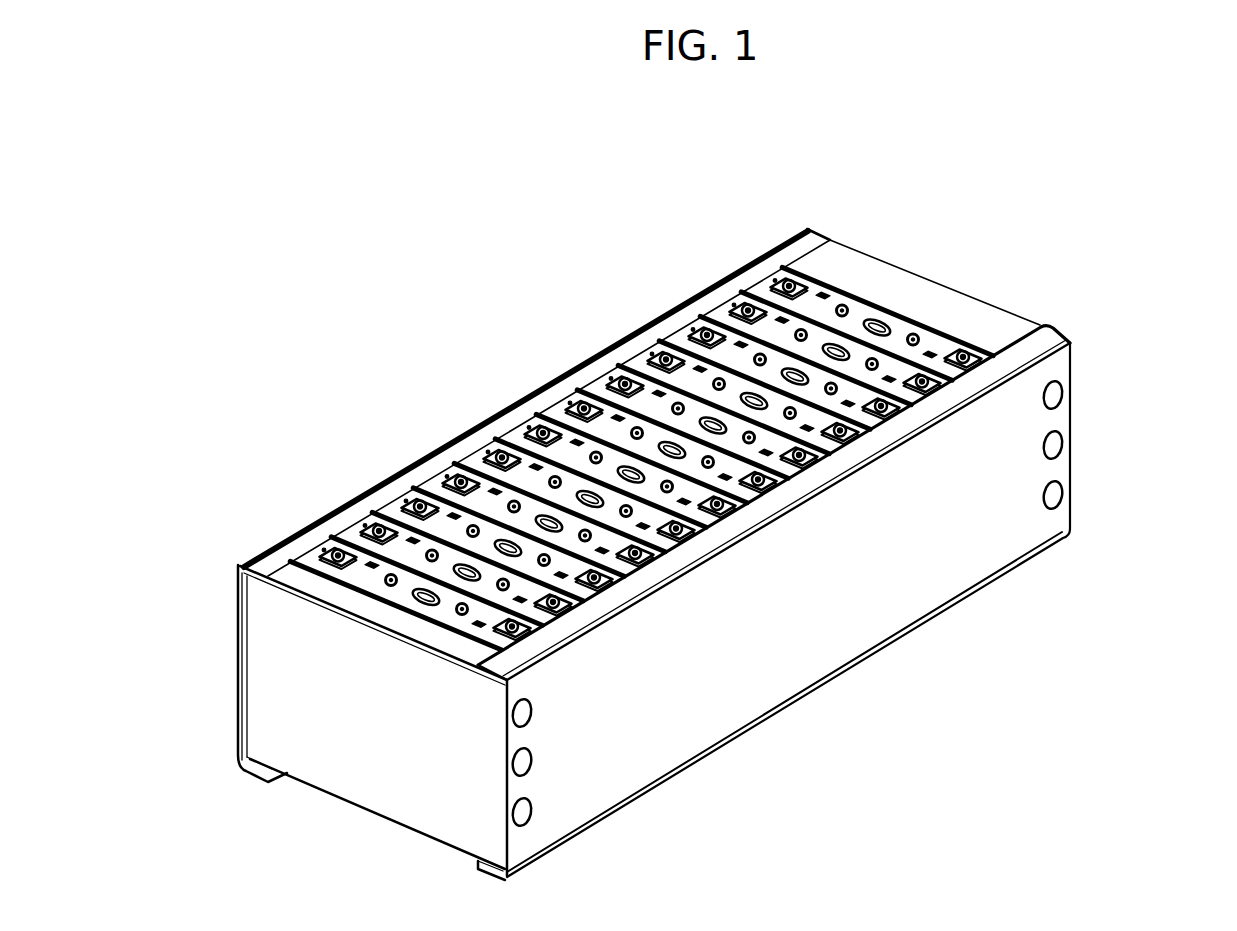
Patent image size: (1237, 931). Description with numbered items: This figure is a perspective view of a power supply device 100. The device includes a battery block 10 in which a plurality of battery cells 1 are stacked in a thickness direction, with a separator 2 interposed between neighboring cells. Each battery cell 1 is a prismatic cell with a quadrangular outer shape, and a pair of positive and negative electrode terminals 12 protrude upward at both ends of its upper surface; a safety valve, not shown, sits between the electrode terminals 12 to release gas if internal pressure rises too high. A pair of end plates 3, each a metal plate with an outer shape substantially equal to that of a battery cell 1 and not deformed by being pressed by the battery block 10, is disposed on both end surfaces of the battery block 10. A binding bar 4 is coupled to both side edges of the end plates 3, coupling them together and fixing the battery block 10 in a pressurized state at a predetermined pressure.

The battery cell 1 is at (352, 508).
The separator 2 is at (412, 497).
The end plate 3 is at (920, 305).
The binding bar 4 is at (330, 527).
The battery block 10 is at (295, 405).
The electrode terminal 12 is at (330, 550).
The power supply device 100 is at (1088, 168).